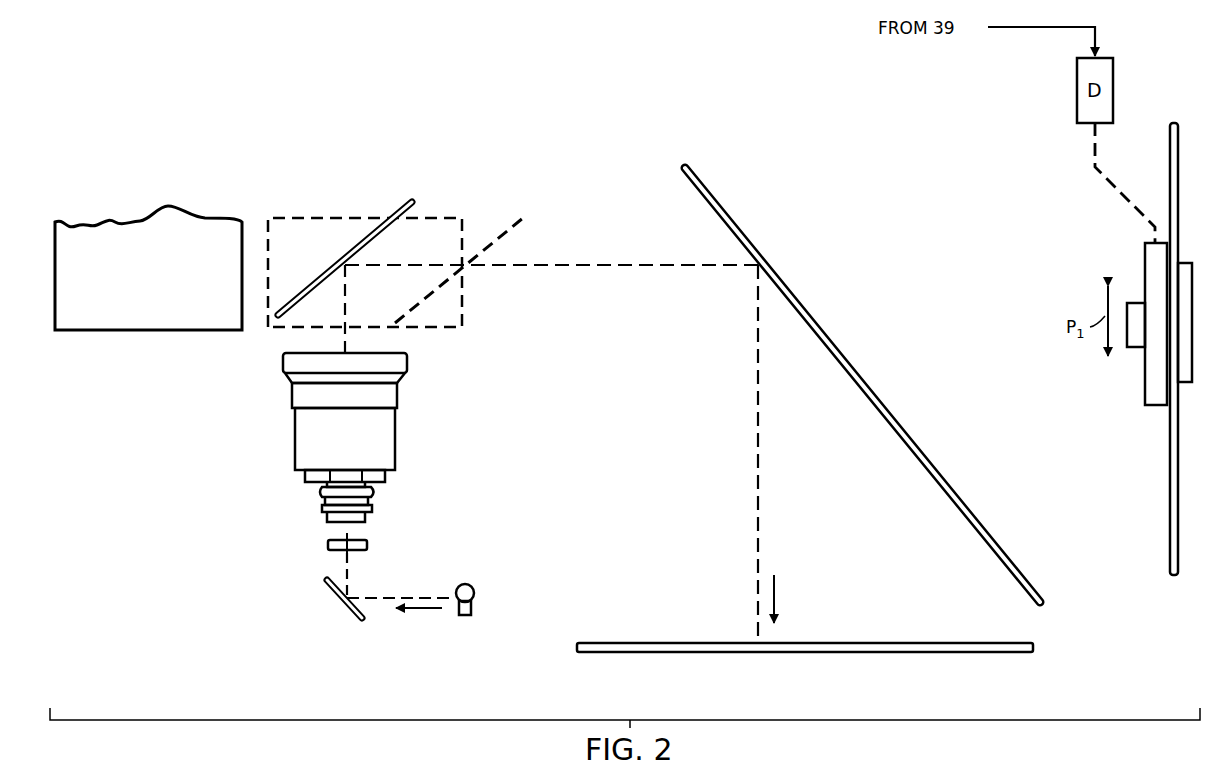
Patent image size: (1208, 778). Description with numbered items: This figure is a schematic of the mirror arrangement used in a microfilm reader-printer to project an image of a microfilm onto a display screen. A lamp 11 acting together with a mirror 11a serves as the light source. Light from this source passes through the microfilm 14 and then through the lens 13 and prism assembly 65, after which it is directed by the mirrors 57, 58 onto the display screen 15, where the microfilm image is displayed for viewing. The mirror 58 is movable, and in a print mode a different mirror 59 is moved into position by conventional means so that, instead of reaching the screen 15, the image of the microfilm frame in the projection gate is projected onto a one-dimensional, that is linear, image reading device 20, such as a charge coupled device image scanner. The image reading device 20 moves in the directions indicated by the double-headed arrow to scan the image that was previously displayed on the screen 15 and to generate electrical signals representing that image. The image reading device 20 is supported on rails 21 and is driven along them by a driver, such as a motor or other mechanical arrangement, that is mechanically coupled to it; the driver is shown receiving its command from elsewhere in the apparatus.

The mirror 59 is at (150, 322).
The mirror 57 is at (404, 222).
The mirror 58 is at (702, 200).
The prism assembly 65 is at (388, 434).
The lens 13 is at (325, 505).
The microfilm 14 is at (368, 545).
The lamp 11 is at (471, 585).
The mirror 11a is at (330, 590).
The display screen 15 is at (910, 641).
The image reading device 20 is at (1124, 365).
The rails 21 is at (1171, 508).